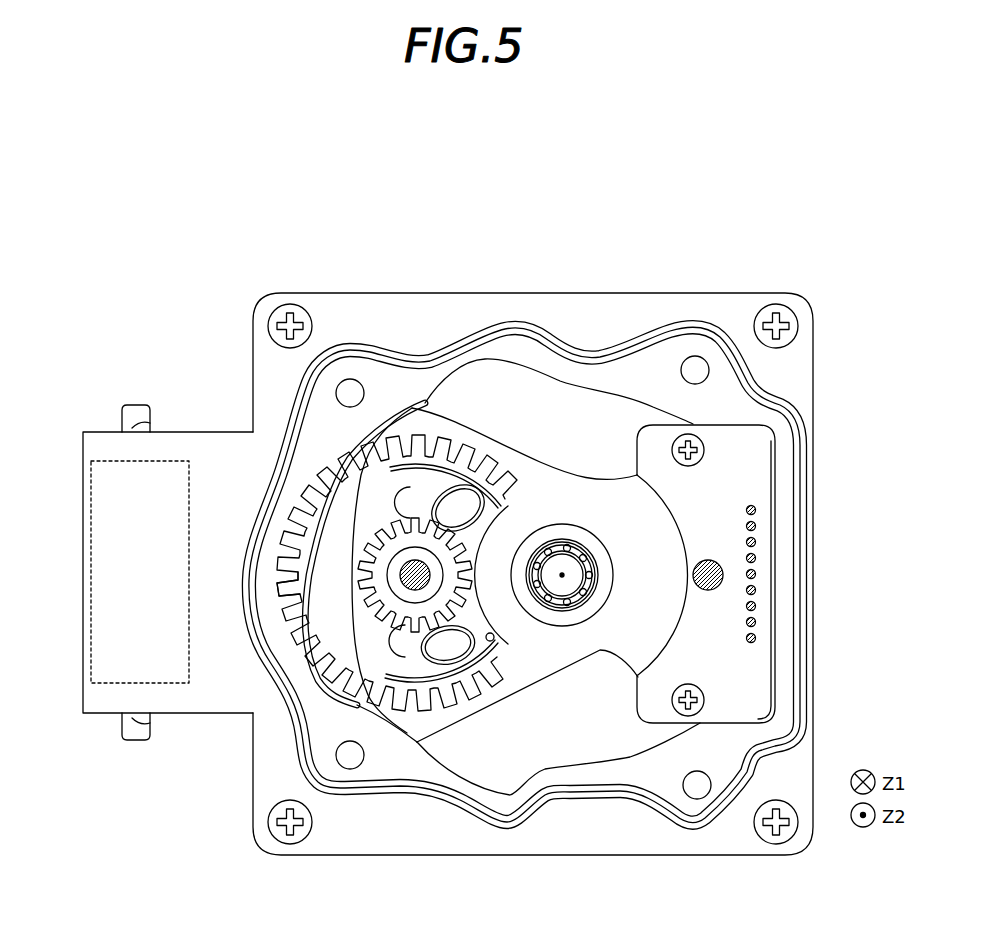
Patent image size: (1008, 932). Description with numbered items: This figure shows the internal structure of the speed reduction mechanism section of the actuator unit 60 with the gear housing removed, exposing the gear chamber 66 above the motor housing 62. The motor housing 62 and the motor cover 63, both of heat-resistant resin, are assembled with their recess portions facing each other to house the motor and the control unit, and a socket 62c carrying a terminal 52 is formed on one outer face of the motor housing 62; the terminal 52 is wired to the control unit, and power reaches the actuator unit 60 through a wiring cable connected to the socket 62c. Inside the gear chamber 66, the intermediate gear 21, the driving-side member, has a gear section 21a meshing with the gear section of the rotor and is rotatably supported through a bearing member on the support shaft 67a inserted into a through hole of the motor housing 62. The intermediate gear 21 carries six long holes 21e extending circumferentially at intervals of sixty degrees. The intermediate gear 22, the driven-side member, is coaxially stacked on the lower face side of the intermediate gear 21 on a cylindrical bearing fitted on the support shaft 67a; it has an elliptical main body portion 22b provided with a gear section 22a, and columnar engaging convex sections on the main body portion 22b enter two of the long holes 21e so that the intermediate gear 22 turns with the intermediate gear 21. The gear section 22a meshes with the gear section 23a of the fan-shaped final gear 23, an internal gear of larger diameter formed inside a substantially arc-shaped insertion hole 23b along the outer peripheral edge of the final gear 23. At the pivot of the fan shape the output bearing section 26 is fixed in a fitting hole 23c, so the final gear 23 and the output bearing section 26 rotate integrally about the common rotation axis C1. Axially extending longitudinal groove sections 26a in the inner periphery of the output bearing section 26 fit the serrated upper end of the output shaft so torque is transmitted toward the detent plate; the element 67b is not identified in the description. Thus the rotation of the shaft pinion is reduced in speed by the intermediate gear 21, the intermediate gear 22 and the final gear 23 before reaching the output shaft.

The actuator unit 60 is at (166, 310).
The motor cover 63 is at (276, 306).
The motor housing 62 is at (205, 445).
The socket 62c is at (100, 470).
The terminal 52 is at (813, 332).
The intermediate gear 21 is at (330, 473).
The gear section 21a is at (370, 535).
The long holes 21e is at (485, 502).
The intermediate gear 22 is at (455, 452).
The gear section 22a is at (425, 535).
The main body portion 22b is at (322, 583).
The final gear 23 is at (541, 474).
The gear section 23a is at (395, 500).
The insertion hole 23b is at (490, 641).
The fitting hole 23c is at (537, 622).
The output bearing section 26 is at (553, 523).
The longitudinal groove sections 26a is at (588, 548).
The rotation axis C1 is at (565, 582).
The gear chamber 66 is at (648, 405).
The support shaft 67a is at (416, 600).
The positioning pin 67b is at (710, 560).